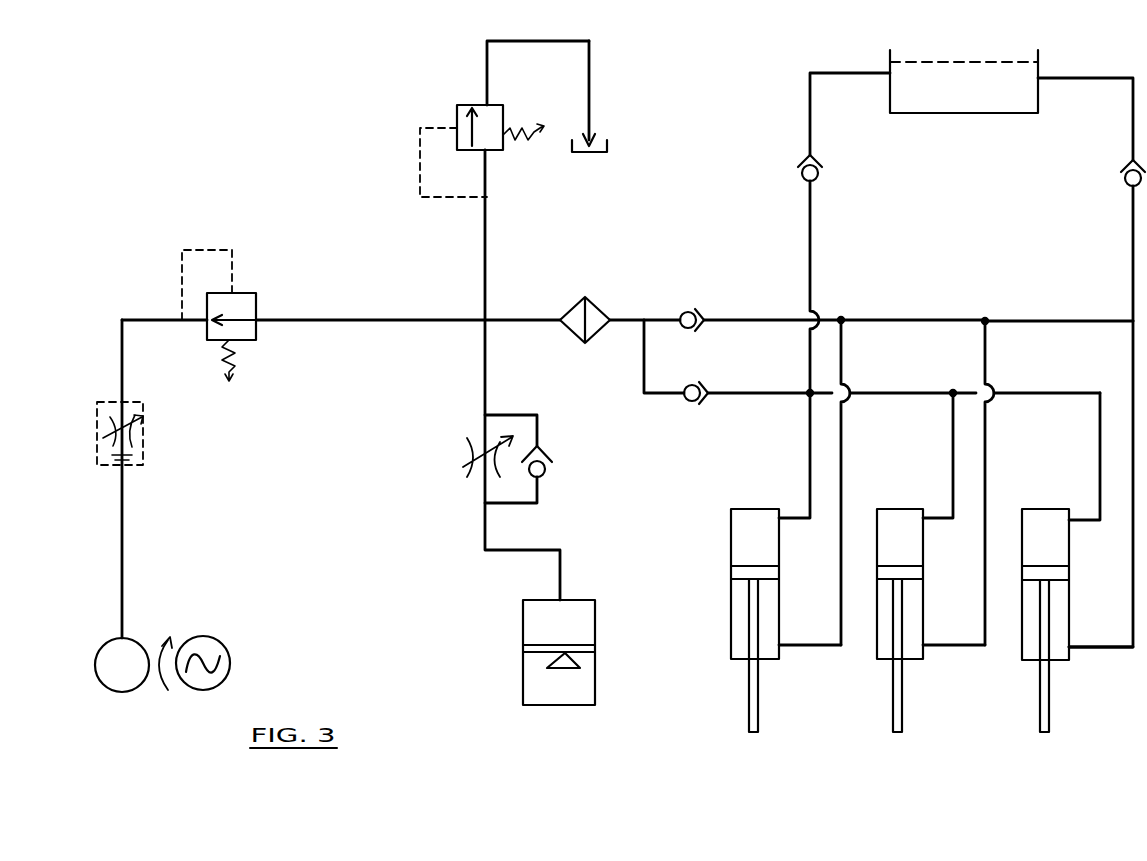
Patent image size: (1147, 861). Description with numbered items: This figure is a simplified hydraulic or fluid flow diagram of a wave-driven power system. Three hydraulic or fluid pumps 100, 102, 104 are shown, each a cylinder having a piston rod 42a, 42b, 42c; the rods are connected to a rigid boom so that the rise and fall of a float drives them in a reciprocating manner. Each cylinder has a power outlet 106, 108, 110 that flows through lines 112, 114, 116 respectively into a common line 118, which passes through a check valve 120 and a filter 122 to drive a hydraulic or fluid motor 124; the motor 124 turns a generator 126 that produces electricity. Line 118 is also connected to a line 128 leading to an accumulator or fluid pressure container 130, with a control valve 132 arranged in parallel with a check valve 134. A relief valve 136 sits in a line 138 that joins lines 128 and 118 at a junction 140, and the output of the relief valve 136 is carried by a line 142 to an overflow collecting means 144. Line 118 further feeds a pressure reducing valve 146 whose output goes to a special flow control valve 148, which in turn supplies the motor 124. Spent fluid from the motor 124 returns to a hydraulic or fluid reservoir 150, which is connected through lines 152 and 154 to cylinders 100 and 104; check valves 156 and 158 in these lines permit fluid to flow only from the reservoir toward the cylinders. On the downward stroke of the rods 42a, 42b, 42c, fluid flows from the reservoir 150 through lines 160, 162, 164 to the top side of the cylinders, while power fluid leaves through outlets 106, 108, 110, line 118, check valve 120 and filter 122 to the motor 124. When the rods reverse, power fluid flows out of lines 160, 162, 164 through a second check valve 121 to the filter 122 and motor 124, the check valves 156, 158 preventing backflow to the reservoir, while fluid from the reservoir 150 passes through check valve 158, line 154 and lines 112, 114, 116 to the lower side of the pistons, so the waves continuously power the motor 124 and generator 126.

The piston rod 42a is at (749, 684).
The piston rod 42b is at (893, 684).
The piston rod 42c is at (1040, 690).
The hydraulic or fluid pump 100 is at (763, 508).
The hydraulic or fluid pump 102 is at (918, 508).
The hydraulic or fluid pump 104 is at (1048, 512).
The power outlet 106 is at (806, 648).
The power outlet 108 is at (948, 650).
The power outlet 110 is at (1095, 650).
The line 112 is at (845, 400).
The line 114 is at (988, 422).
The line 116 is at (1133, 460).
The line 118 is at (957, 322).
The check valve 120 is at (702, 308).
The check valve 121 is at (690, 400).
The filter 122 is at (600, 305).
The hydraulic or fluid motor 124 is at (115, 692).
The generator 126 is at (228, 645).
The line 128 is at (485, 385).
The accumulator or fluid pressure container 130 is at (523, 675).
The control valve 132 is at (462, 459).
The check valve 134 is at (552, 452).
The relief valve 136 is at (455, 114).
The line 138 is at (480, 268).
The junction 140 is at (486, 318).
The line 142 is at (591, 87).
The overflow collecting means 144 is at (597, 140).
The pressure reducing valve 146 is at (250, 293).
The special flow control valve 148 is at (145, 420).
The hydraulic or fluid reservoir 150 is at (985, 113).
The line 152 is at (812, 240).
The line 154 is at (1130, 218).
The check valve 156 is at (824, 165).
The check valve 158 is at (1125, 182).
The line 160 is at (808, 417).
The line 162 is at (950, 420).
The line 164 is at (1099, 420).